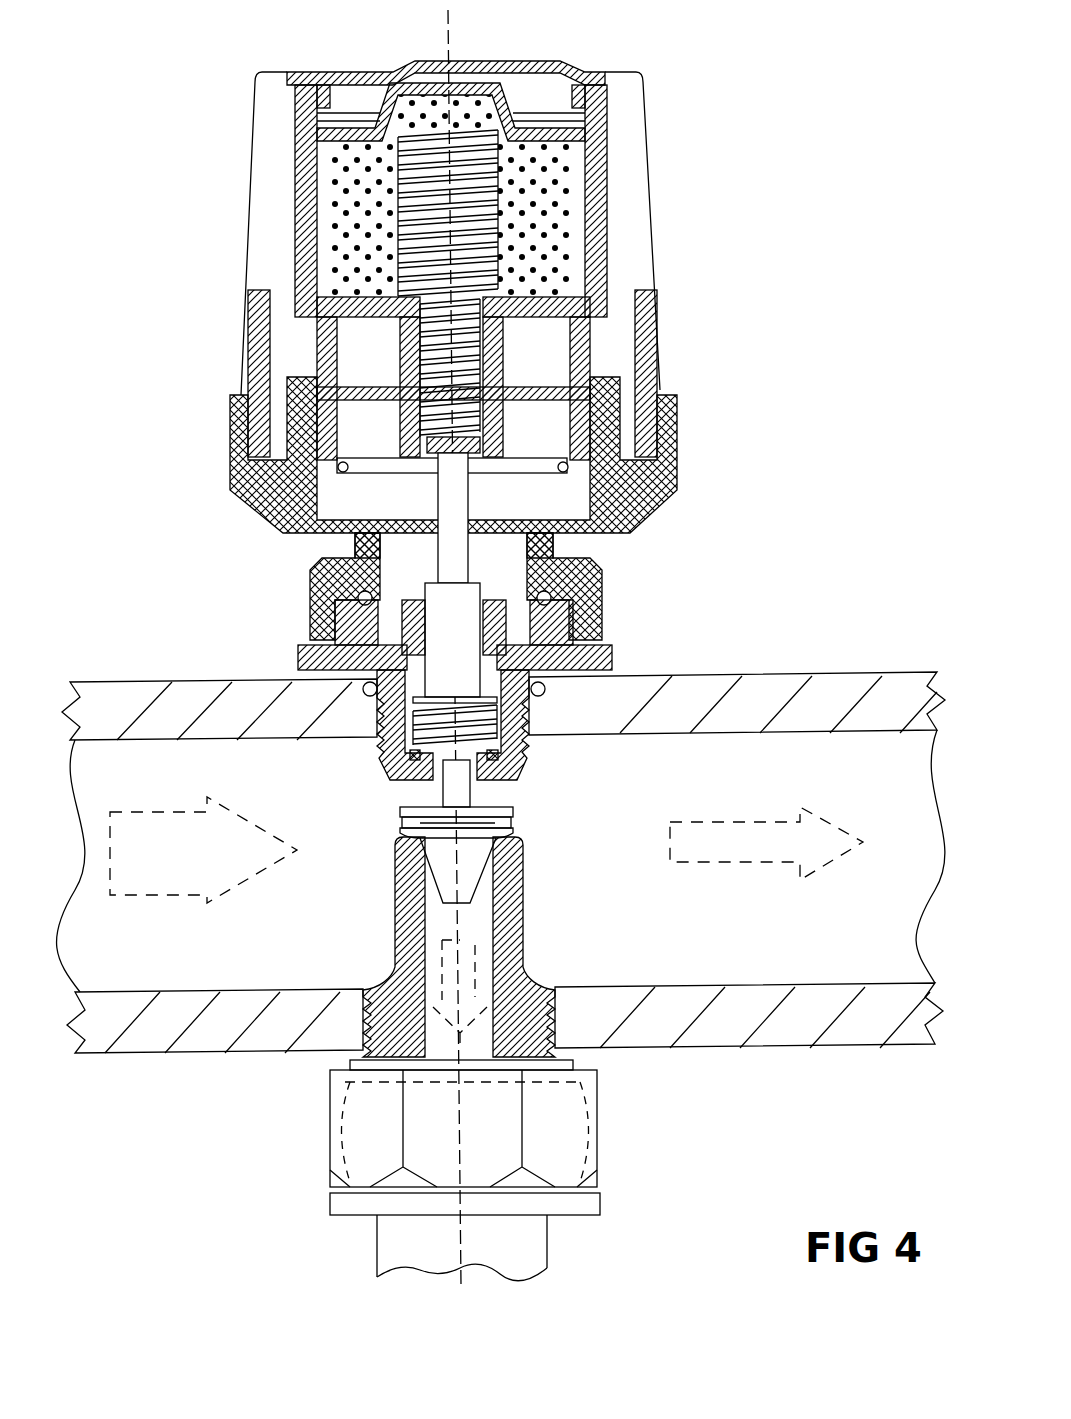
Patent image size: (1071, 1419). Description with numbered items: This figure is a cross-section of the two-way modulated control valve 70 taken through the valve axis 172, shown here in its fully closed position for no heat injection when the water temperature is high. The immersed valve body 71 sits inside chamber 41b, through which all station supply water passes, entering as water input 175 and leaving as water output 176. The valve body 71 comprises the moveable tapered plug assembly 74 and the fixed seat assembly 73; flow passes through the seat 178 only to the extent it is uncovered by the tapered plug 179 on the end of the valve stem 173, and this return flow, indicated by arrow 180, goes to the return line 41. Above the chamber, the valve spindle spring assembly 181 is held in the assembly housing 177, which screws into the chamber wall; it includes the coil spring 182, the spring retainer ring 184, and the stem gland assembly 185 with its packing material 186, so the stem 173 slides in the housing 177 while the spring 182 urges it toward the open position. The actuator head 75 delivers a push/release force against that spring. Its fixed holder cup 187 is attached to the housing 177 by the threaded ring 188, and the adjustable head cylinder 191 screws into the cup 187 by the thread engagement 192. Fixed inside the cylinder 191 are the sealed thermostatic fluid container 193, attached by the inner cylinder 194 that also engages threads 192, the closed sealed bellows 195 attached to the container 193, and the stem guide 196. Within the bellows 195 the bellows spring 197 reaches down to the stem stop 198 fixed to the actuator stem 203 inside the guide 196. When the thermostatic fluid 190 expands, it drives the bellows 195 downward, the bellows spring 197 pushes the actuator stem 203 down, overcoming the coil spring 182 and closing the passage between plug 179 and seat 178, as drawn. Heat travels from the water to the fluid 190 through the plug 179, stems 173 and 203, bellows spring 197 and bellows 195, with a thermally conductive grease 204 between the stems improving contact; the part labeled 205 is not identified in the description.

The return line 41 is at (548, 1238).
The chamber 41b is at (140, 680).
The two-way modulated control valve 70 is at (800, 480).
The immersed valve body 71 is at (575, 812).
The fixed seat assembly 73 is at (522, 907).
The moveable tapered plug assembly 74 is at (365, 806).
The actuator head 75 is at (818, 58).
The valve axis 172 is at (455, 22).
The valve stem 173 is at (553, 558).
The water input 175 is at (178, 896).
The water output 176 is at (754, 861).
The assembly housing 177 is at (607, 647).
The seat 178 is at (487, 822).
The tapered plug 179 is at (447, 903).
The flow arrow 180 is at (473, 950).
The valve spindle spring assembly 181 is at (720, 583).
The coil spring 182 is at (605, 688).
The spring retainer ring 184 is at (195, 539).
The stem gland assembly 185 is at (353, 548).
The packing material 186 is at (400, 623).
The actuator fixed holder cup 187 is at (232, 440).
The threaded ring 188 is at (385, 725).
The thermostatic fluid 190 is at (360, 185).
The adjustable head cylinder 191 is at (643, 108).
The thread engagement 192 is at (292, 378).
The thermostatic fluid container 193 is at (560, 67).
The inner cylinder 194 is at (607, 213).
The bellows 195 is at (337, 230).
The stem guide 196 is at (395, 366).
The bellows spring 197 is at (607, 140).
The stem stop 198 is at (493, 437).
The actuator stem 203 is at (470, 493).
The thermally conductive grease 204 is at (430, 582).
The valve seat 205 is at (402, 833).